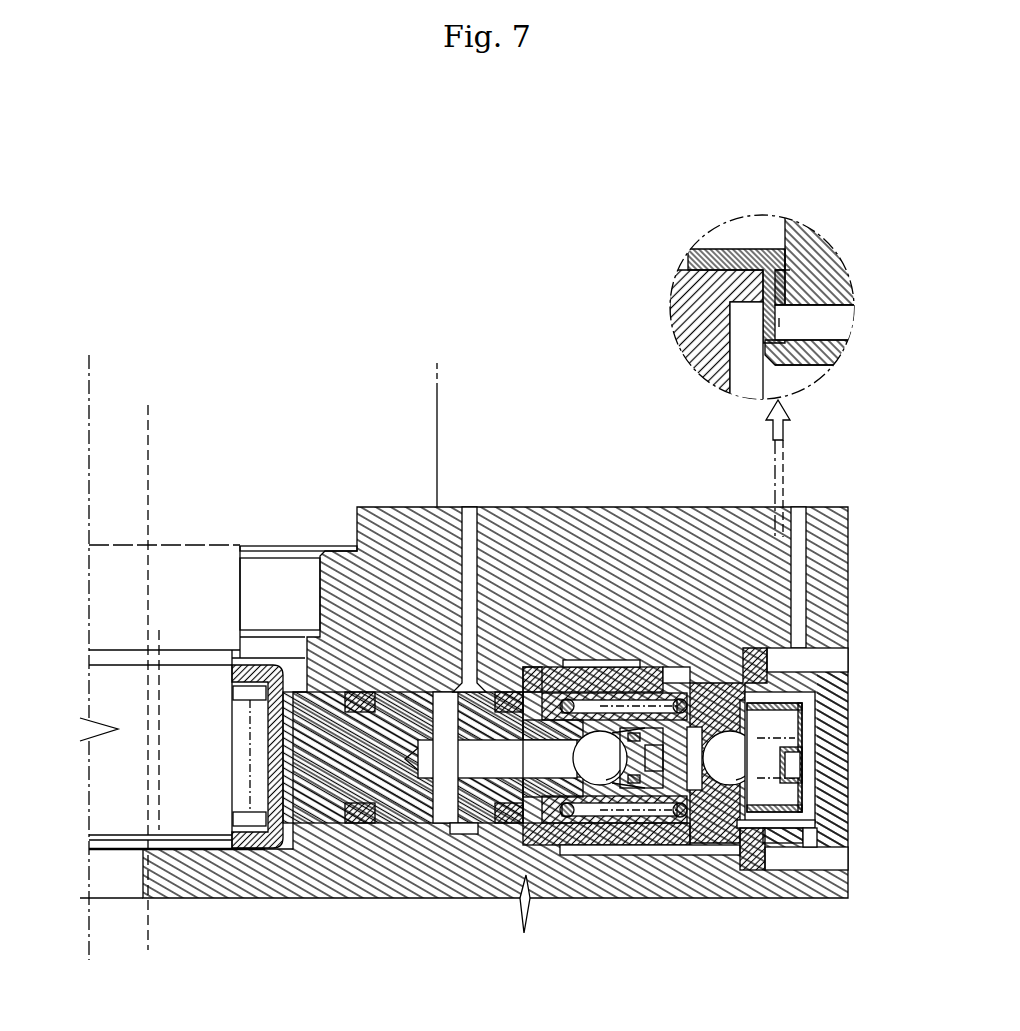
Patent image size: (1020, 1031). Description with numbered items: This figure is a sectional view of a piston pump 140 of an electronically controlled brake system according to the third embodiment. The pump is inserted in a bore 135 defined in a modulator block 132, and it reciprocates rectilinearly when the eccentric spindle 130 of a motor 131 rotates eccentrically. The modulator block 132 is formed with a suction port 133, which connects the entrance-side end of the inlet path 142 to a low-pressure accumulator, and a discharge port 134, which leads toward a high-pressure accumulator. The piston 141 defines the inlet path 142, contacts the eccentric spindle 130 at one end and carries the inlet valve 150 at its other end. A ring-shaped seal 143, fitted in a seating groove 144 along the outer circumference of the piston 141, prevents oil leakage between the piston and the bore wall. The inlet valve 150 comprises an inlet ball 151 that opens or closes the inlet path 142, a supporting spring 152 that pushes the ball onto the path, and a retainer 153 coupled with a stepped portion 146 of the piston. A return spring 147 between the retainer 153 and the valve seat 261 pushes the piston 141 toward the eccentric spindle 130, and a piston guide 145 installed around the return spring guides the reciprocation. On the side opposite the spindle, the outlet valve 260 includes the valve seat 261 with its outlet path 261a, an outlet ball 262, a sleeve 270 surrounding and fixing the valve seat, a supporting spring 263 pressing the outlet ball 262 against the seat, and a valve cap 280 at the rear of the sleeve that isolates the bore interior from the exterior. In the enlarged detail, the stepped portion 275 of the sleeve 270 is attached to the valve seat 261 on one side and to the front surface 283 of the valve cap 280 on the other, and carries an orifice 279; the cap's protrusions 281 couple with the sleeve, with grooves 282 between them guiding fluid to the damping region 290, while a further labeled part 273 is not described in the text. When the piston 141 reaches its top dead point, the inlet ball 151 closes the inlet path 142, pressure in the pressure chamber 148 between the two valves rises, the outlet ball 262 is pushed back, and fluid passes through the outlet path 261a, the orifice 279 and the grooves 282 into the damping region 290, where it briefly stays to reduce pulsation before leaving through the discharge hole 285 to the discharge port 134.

The eccentric spindle 130 is at (197, 823).
The motor 131 is at (425, 418).
The modulator block 132 is at (601, 500).
The suction port 133 is at (470, 508).
The discharge port 134 is at (802, 523).
The bore 135 is at (593, 855).
The piston pump 140 is at (500, 840).
The piston 141 is at (390, 808).
The inlet path 142 is at (460, 757).
The seal 143 is at (508, 694).
The seating groove 144 is at (527, 690).
The piston guide 145 is at (622, 695).
The stepped portion 146 is at (536, 680).
The return spring 147 is at (662, 728).
The pressure chamber 148 is at (703, 790).
The inlet valve 150 is at (603, 785).
The inlet ball 151 is at (650, 697).
The supporting spring 152 is at (690, 705).
The retainer 153 is at (668, 705).
The outlet valve 260 is at (768, 824).
The valve seat 261 is at (737, 685).
The outlet path 261a is at (752, 693).
The outlet ball 262 is at (757, 723).
The supporting spring 263 is at (823, 803).
The sleeve 270 is at (773, 783).
The seal member 273 is at (723, 249).
The stepped portion 275 is at (785, 268).
The orifice 279 is at (745, 835).
The valve cap 280 is at (813, 847).
The protrusions 281 is at (830, 363).
The grooves 282 is at (838, 305).
The front surface 283 is at (790, 267).
The discharge hole 285 is at (812, 848).
The damping region 290 is at (805, 745).